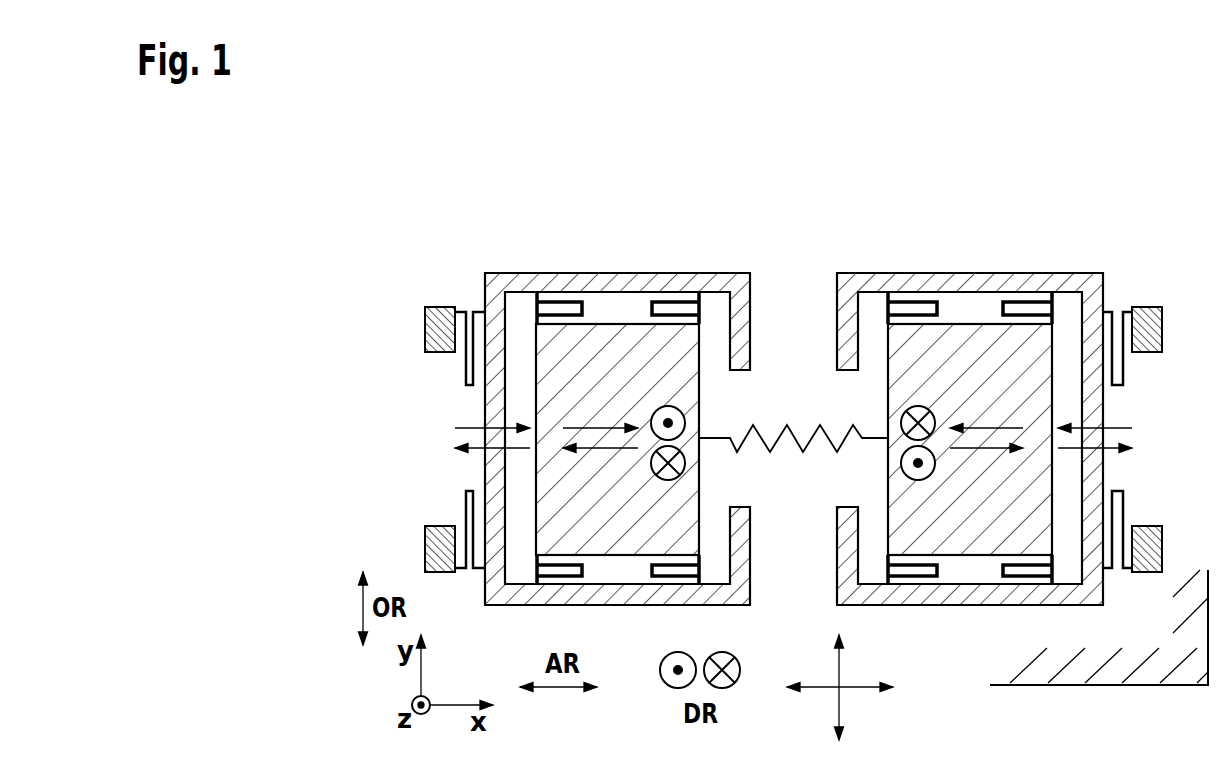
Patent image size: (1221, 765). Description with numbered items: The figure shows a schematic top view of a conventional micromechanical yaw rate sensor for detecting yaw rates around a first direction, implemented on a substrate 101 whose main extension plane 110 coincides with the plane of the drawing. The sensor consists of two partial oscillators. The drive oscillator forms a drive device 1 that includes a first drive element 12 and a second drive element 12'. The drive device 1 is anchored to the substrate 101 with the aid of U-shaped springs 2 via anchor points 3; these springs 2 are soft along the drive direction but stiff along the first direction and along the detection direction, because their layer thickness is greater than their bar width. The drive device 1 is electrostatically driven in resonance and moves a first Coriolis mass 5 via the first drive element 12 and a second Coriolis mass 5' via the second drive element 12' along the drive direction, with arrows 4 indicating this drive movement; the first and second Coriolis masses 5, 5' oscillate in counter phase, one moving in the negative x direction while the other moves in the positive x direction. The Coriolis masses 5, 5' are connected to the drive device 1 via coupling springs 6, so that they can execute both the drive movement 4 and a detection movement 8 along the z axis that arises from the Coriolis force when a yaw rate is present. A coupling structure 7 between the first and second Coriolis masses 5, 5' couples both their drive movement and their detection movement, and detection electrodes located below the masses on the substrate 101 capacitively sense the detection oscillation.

The drive device 1 is at (890, 177).
The first drive element 12 is at (617, 394).
The second drive element 12' is at (970, 394).
The springs 2 is at (462, 310).
The anchor points 3 is at (425, 342).
The arrows 4 is at (455, 428).
The first Coriolis mass 5 is at (617, 374).
The second Coriolis mass 5' is at (970, 374).
The coupling springs 6 is at (1023, 300).
The coupling structure 7 is at (800, 425).
The detection movement 8 is at (888, 476).
The main extension plane 110 is at (842, 687).
The substrate 101 is at (1008, 648).